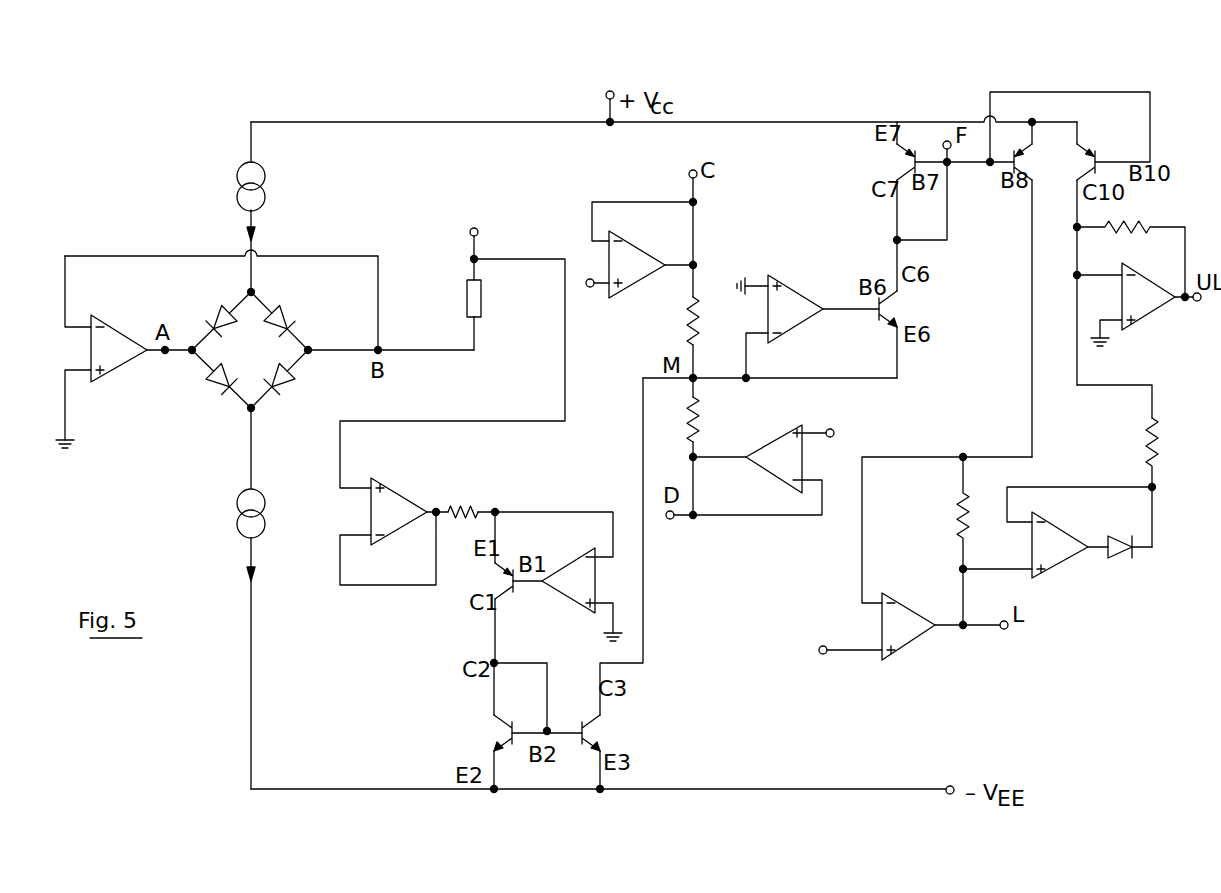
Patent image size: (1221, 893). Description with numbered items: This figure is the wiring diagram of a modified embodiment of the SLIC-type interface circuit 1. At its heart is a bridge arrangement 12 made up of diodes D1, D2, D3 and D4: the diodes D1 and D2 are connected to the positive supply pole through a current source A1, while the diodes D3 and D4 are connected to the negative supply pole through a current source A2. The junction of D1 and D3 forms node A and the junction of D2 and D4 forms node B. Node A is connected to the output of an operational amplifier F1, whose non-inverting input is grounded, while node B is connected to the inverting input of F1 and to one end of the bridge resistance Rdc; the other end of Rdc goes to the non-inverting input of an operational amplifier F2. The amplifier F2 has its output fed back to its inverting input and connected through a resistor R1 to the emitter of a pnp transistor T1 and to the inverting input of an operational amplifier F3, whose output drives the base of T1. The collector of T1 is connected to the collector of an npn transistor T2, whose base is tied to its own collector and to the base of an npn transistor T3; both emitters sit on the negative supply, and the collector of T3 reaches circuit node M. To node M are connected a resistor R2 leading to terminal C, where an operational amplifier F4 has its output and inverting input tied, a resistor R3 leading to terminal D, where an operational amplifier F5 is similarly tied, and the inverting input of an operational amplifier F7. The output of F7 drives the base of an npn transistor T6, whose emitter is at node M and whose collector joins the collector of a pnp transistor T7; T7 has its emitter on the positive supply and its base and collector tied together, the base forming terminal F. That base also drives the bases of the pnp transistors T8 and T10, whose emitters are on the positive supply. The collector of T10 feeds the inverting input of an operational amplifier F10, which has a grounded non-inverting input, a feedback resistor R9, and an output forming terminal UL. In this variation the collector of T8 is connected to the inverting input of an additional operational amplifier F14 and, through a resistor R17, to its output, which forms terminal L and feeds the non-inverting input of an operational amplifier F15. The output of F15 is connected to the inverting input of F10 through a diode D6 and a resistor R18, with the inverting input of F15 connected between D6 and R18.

The interface circuit 1 is at (189, 434).
The bridge arrangement 12 is at (245, 349).
The current source A1 is at (269, 186).
The current source A2 is at (269, 513).
The diode D1 is at (222, 320).
The diode D2 is at (281, 321).
The diode D3 is at (222, 378).
The diode D4 is at (279, 379).
The diode D6 is at (1122, 560).
The operational amplifier F1 is at (113, 350).
The operational amplifier F2 is at (392, 506).
The operational amplifier F3 is at (573, 585).
The operational amplifier F4 is at (648, 272).
The operational amplifier F5 is at (779, 458).
The operational amplifier F7 is at (791, 303).
The operational amplifier F10 is at (1144, 304).
The operational amplifier F14 is at (946, 657).
The operational amplifier F15 is at (1096, 579).
The resistor R1 is at (466, 497).
The resistor R2 is at (709, 321).
The resistor R3 is at (708, 419).
The resistor R9 is at (1131, 247).
The resistor R17 is at (946, 541).
The resistor R18 is at (1133, 452).
The bridge resistance Rdc is at (498, 289).
The transistor T1 is at (506, 587).
The transistor T2 is at (480, 726).
The transistor T3 is at (612, 583).
The transistor T6 is at (904, 279).
The transistor T7 is at (892, 151).
The transistor T8 is at (1037, 289).
The transistor T10 is at (1100, 253).